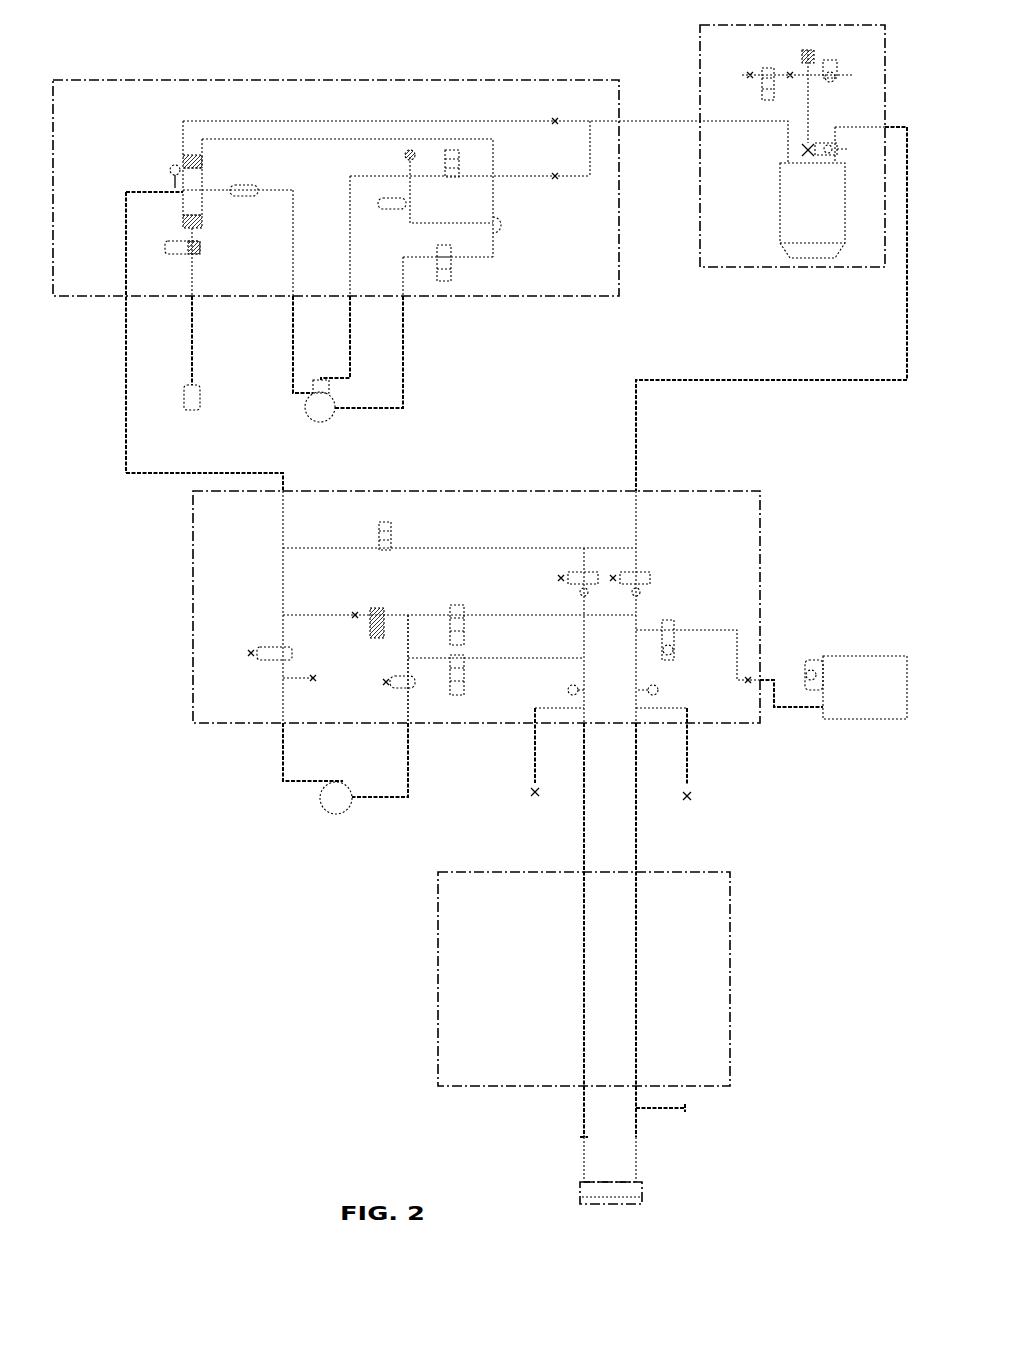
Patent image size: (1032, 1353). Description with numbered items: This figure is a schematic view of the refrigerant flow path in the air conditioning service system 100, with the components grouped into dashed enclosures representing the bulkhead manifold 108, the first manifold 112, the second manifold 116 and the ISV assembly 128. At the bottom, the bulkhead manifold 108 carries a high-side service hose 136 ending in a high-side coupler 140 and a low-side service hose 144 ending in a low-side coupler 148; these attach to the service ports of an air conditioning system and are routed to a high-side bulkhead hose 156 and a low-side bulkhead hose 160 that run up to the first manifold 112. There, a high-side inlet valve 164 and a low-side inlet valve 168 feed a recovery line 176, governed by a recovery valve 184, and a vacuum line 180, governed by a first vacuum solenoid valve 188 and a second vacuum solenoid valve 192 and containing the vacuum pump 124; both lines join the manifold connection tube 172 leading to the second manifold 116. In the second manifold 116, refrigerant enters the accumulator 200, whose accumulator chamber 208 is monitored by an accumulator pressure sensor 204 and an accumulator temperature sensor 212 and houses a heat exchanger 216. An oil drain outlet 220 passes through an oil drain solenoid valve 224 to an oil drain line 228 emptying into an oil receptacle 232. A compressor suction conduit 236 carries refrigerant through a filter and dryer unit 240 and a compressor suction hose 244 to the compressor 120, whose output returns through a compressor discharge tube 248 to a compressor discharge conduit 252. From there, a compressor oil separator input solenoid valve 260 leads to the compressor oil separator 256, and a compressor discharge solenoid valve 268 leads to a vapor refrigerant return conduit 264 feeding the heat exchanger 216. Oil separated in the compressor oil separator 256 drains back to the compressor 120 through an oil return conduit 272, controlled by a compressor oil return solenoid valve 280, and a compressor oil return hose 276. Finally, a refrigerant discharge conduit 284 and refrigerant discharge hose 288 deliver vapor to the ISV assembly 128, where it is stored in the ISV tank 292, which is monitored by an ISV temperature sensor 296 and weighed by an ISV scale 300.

The air conditioning service system 100 is at (162, 58).
The bulkhead manifold 108 is at (696, 872).
The first manifold 112 is at (688, 491).
The second manifold 116 is at (235, 80).
The compressor 120 is at (306, 410).
The vacuum pump 124 is at (333, 813).
The ISV assembly 128 is at (742, 25).
The high-side service hose 136 is at (584, 1112).
The high-side coupler 140 is at (584, 1137).
The low-side service hose 144 is at (636, 1105).
The low-side coupler 148 is at (636, 1137).
The high-side bulkhead hose 156 is at (584, 855).
The low-side bulkhead hose 160 is at (636, 855).
The high-side inlet valve 164 is at (464, 680).
The low-side inlet valve 168 is at (464, 615).
The manifold connection tube 172 is at (160, 473).
The recovery line 176 is at (403, 618).
The vacuum line 180 is at (408, 800).
The recovery valve 184 is at (382, 612).
The first vacuum solenoid valve 188 is at (390, 682).
The second vacuum solenoid valve 192 is at (268, 647).
The accumulator 200 is at (126, 250).
The accumulator pressure sensor 204 is at (183, 162).
The accumulator chamber 208 is at (203, 220).
The accumulator temperature sensor 212 is at (170, 172).
The heat exchanger 216 is at (183, 193).
The oil drain outlet 220 is at (190, 233).
The oil drain solenoid valve 224 is at (183, 255).
The oil drain line 228 is at (192, 285).
The oil receptacle 232 is at (200, 402).
The compressor suction conduit 236 is at (293, 245).
The filter and dryer unit 240 is at (248, 187).
The compressor suction hose 244 is at (293, 333).
The compressor discharge tube 248 is at (350, 353).
The compressor discharge conduit 252 is at (350, 247).
The compressor oil separator 256 is at (500, 225).
The compressor oil separator input solenoid valve 260 is at (410, 205).
The vapor refrigerant return conduit 264 is at (316, 139).
The compressor discharge solenoid valve 268 is at (459, 160).
The oil return conduit 272 is at (403, 280).
The compressor oil return hose 276 is at (403, 376).
The compressor oil return solenoid valve 280 is at (451, 272).
The refrigerant discharge conduit 284 is at (390, 121).
The refrigerant discharge hose 288 is at (628, 121).
The ISV tank 292 is at (780, 200).
The ISV temperature sensor 296 is at (815, 152).
The ISV scale 300 is at (790, 258).